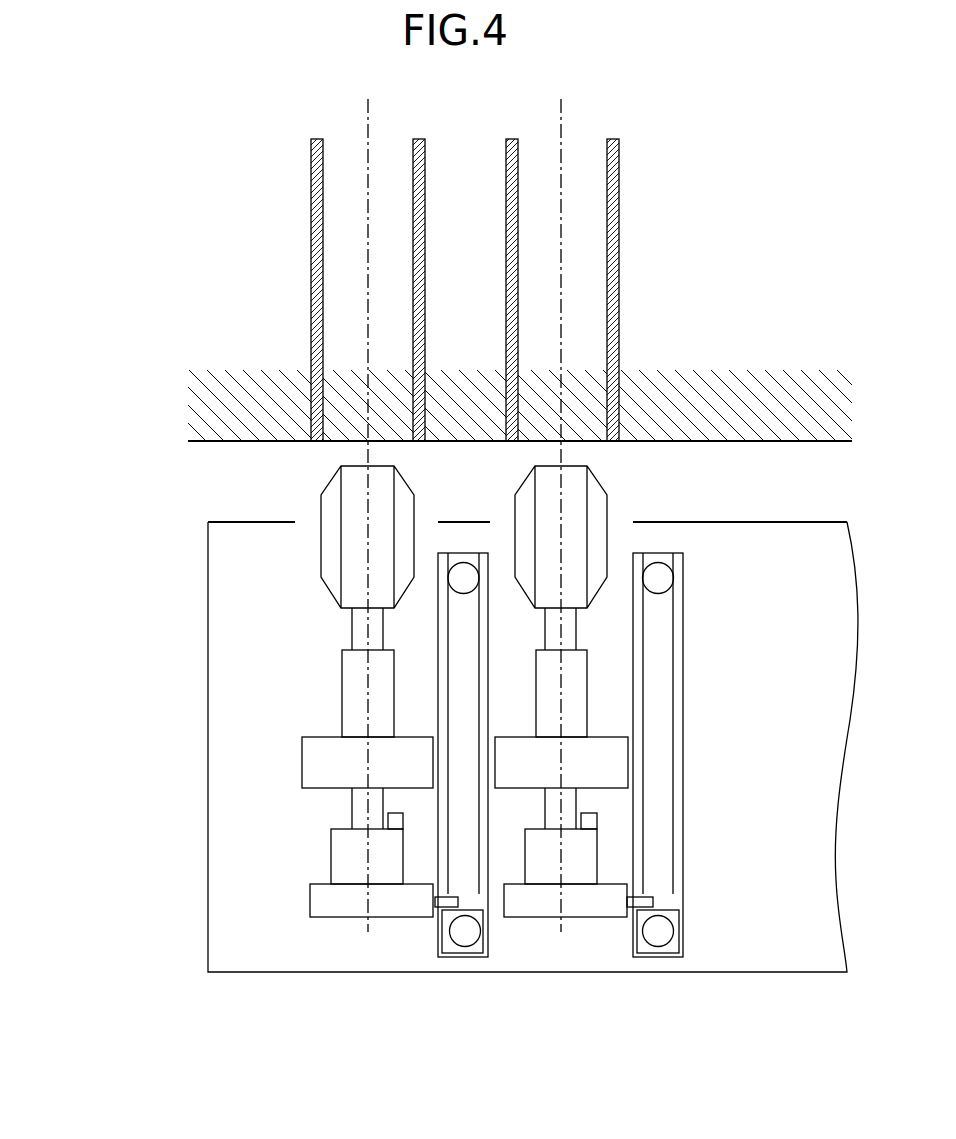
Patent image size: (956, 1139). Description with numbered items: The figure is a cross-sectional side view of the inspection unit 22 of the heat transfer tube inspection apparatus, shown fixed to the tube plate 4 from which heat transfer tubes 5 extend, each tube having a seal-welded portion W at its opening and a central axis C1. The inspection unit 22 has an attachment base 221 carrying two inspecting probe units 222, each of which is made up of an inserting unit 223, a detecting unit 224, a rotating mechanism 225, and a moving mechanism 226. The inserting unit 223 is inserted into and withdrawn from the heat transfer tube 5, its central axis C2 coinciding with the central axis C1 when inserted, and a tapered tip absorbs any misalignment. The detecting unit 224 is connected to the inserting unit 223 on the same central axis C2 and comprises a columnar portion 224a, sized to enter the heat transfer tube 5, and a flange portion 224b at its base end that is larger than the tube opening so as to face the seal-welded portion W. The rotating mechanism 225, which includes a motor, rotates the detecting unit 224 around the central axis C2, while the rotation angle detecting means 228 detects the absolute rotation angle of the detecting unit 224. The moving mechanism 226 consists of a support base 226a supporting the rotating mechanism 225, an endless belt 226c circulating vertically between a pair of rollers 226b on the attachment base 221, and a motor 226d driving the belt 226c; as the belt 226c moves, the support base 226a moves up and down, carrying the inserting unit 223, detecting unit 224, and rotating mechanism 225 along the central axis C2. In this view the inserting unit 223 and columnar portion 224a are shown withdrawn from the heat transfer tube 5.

The tube plate 4 is at (825, 430).
The heat transfer tube 5 is at (311, 160).
The inspection unit 22 is at (198, 568).
The attachment base 221 is at (785, 535).
The inspecting probe unit 222 is at (306, 515).
The inserting unit 223 is at (327, 567).
The detecting unit 224 is at (328, 667).
The columnar portion 224a is at (350, 697).
The flange portion 224b is at (315, 767).
The rotating mechanism 225 is at (340, 860).
The moving mechanism 226 is at (690, 787).
The support base 226a is at (325, 905).
The rollers 226b is at (468, 580).
The endless belt 226c is at (683, 858).
The motor 226d is at (478, 945).
The rotation angle detecting means 228 is at (390, 823).
The seal-welded portion W is at (313, 448).
The central axis of the heat transfer tube C1 is at (367, 152).
The central axis of the inserting unit C2 is at (366, 520).